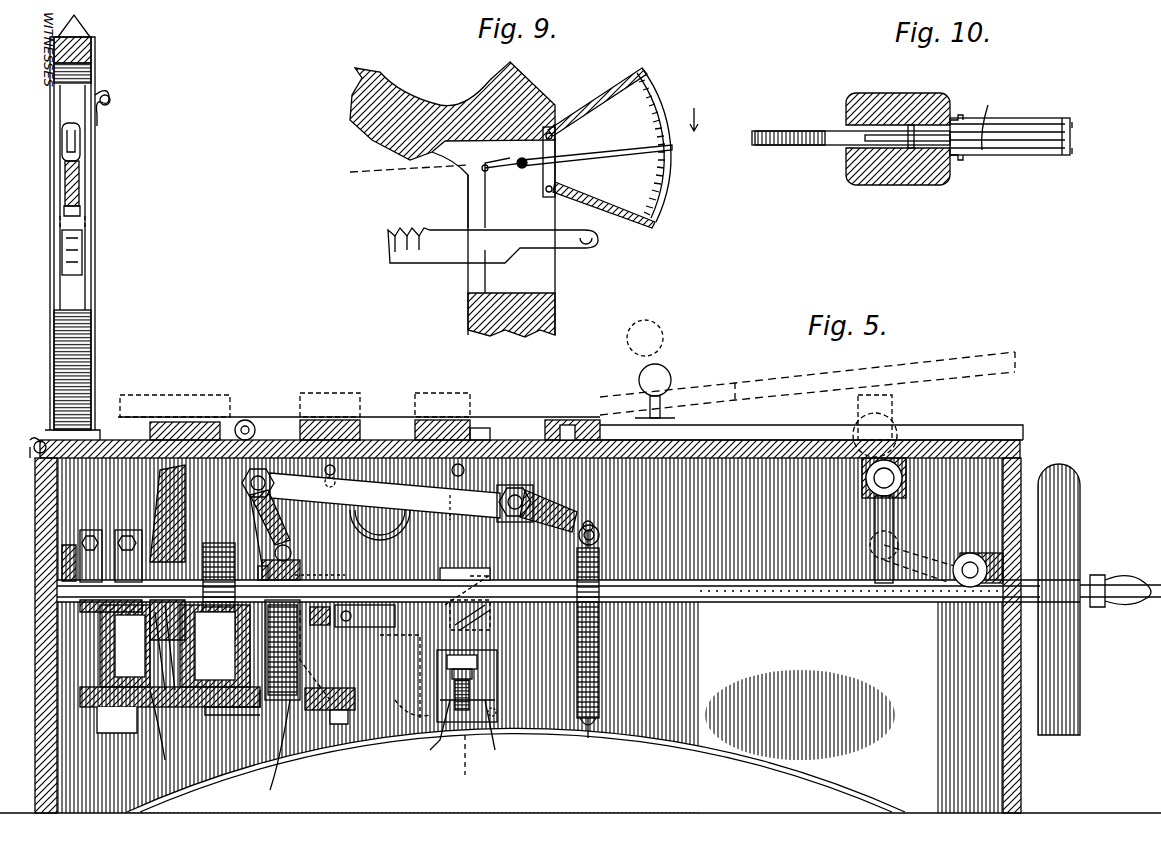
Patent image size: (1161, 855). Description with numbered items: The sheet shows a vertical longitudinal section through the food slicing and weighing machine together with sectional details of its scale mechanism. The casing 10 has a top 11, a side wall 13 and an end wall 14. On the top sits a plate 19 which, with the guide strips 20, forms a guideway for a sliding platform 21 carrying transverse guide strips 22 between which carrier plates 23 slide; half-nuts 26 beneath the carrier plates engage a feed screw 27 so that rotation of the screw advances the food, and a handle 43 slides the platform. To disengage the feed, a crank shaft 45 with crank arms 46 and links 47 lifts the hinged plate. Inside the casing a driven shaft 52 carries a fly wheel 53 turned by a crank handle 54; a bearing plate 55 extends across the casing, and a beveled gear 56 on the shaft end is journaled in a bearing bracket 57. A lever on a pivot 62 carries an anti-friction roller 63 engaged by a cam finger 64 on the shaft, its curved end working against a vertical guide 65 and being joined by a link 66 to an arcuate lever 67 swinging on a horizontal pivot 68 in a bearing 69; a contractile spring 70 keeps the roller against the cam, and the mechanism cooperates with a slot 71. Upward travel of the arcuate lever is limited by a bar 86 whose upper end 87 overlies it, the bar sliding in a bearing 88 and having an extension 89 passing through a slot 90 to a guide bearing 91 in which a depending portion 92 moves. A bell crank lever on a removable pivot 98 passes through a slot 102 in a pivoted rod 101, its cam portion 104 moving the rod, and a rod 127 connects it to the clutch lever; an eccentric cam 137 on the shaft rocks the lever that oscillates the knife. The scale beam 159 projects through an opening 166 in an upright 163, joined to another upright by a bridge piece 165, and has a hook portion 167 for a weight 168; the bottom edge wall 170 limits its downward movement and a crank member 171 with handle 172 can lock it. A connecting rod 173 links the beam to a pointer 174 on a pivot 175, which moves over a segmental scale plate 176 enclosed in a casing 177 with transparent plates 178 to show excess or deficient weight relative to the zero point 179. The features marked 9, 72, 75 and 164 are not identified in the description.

In FIG. 5, the section line 9 is at (315, 655).
In FIG. 9, the casing 10 is at (528, 145).
In FIG. 5, the top 11 is at (1020, 450).
In FIG. 5, the side wall 13 is at (860, 602).
In FIG. 5, the end wall 14 is at (57, 768).
In FIG. 5, the plate 19 is at (950, 425).
In FIG. 5, the guide strips 20 is at (1015, 425).
In FIG. 5, the platform 21 is at (700, 405).
In FIG. 5, the guide strips 22 is at (365, 420).
In FIG. 5, the carrier plates 23 is at (425, 392).
In FIG. 5, the half-nuts 26 is at (585, 418).
In FIG. 5, the feed screw 27 is at (475, 425).
In FIG. 5, the handle 43 is at (662, 350).
In FIG. 5, the crank shaft 45 is at (968, 580).
In FIG. 5, the crank arms 46 is at (920, 555).
In FIG. 5, the links 47 is at (875, 540).
In FIG. 5, the driven shaft 52 is at (820, 602).
In FIG. 5, the fly wheel 53 is at (1062, 470).
In FIG. 5, the crank handle 54 is at (1125, 580).
In FIG. 5, the bearing plate 55 is at (340, 722).
In FIG. 5, the beveled gear 56 is at (158, 496).
In FIG. 5, the bearing bracket 57 is at (88, 640).
In FIG. 5, the pivot 62 is at (285, 700).
In FIG. 5, the anti-friction roller 63 is at (220, 746).
In FIG. 5, the cam finger 64 is at (300, 568).
In FIG. 5, the vertical guide 65 is at (245, 668).
In FIG. 5, the link 66 is at (283, 520).
In FIG. 5, the arcuate lever 67 is at (342, 690).
In FIG. 5, the horizontal pivot 68 is at (578, 515).
In FIG. 5, the bearing 69 is at (578, 543).
In FIG. 5, the contractile spring 70 is at (672, 748).
In FIG. 5, the slot 71 is at (260, 548).
In FIG. 5, the pivot nut 72 is at (242, 485).
In FIG. 5, the casing end wall 75 is at (1021, 748).
In FIG. 5, the bar 86 is at (480, 568).
In FIG. 5, the upper end 87 is at (533, 495).
In FIG. 5, the bearing 88 is at (445, 568).
In FIG. 5, the extension 89 is at (478, 680).
In FIG. 5, the slot 90 is at (431, 734).
In FIG. 5, the guide bearing 91 is at (501, 734).
In FIG. 5, the depending portion 92 is at (474, 764).
In FIG. 5, the pivot 98 is at (380, 578).
In FIG. 5, the rod 101 is at (397, 700).
In FIG. 5, the slot 102 is at (405, 655).
In FIG. 5, the cam portion 104 is at (445, 610).
In FIG. 5, the rod 127 is at (352, 619).
In FIG. 5, the eccentric cam 137 is at (230, 543).
In FIG. 5, the scale beam 159 is at (80, 190).
In FIG. 9, the scale beam 159 is at (440, 262).
In FIG. 10, the scale beam 159 is at (795, 145).
In FIG. 5, the upright 163 is at (96, 300).
In FIG. 9, the upright 163 is at (491, 315).
In FIG. 10, the upright 163 is at (855, 185).
In FIG. 5, the post base 164 is at (96, 358).
In FIG. 5, the bridge piece 165 is at (96, 50).
In FIG. 9, the bridge piece 165 is at (432, 111).
In FIG. 5, the opening 166 is at (80, 210).
In FIG. 9, the opening 166 is at (560, 272).
In FIG. 10, the opening 166 is at (850, 130).
In FIG. 9, the hook portion 167 is at (600, 244).
In FIG. 5, the weight 168 is at (82, 258).
In FIG. 5, the bottom edge wall 170 is at (62, 212).
In FIG. 9, the bottom edge wall 170 is at (493, 237).
In FIG. 5, the crank member 171 is at (82, 140).
In FIG. 5, the handle 172 is at (112, 98).
In FIG. 9, the connecting rod 173 is at (488, 210).
In FIG. 9, the pointer 174 is at (600, 160).
In FIG. 10, the pointer 174 is at (989, 113).
In FIG. 9, the pivot 175 is at (600, 88).
In FIG. 10, the pivot 175 is at (912, 150).
In FIG. 9, the segmental scale plate 176 is at (630, 145).
In FIG. 10, the segmental scale plate 176 is at (1068, 158).
In FIG. 10, the casing 177 is at (955, 170).
In FIG. 10, the transparent plates 178 is at (1040, 160).
In FIG. 9, the zero point 179 is at (674, 150).